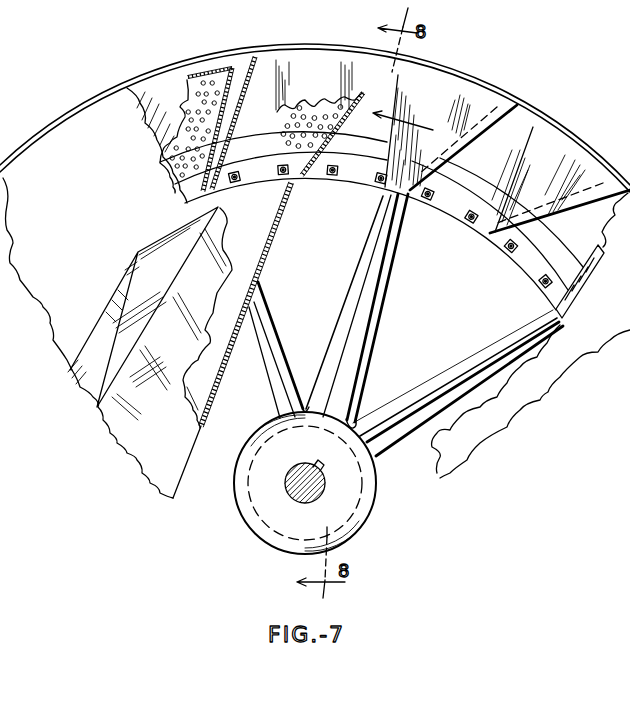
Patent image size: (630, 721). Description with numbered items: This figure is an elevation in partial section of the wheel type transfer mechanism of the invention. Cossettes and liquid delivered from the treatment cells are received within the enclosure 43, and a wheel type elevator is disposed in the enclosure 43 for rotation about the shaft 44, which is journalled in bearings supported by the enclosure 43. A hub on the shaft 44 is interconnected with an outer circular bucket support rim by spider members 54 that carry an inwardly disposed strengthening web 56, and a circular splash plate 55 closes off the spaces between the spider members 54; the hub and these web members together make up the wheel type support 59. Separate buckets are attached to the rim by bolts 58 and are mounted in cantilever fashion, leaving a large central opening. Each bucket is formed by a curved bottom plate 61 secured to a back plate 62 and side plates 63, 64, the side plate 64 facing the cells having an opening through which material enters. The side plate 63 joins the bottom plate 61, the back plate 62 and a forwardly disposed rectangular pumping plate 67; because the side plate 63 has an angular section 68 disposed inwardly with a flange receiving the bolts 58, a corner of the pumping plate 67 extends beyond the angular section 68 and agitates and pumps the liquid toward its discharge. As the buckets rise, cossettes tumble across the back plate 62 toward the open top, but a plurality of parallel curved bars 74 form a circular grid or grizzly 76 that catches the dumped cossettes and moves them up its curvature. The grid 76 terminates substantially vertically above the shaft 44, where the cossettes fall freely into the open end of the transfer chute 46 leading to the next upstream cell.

The enclosure 43 is at (45, 152).
The shaft 44 is at (324, 490).
The interconnecting chute 46 is at (137, 413).
The spider member 54 is at (378, 305).
The circular splash plate 55 is at (322, 282).
The strengthening web 56 is at (372, 280).
The bolt 58 is at (334, 176).
The wheel type support 59 is at (352, 421).
The curved bottom plate 61 is at (190, 76).
The back plate 62 is at (212, 82).
The side plate 63 is at (266, 131).
The side plate 64 is at (452, 102).
The pumping plate 67 is at (235, 92).
The angular section 68 is at (250, 157).
The curved bar 74 is at (501, 249).
The grid or grizzly 76 is at (439, 223).